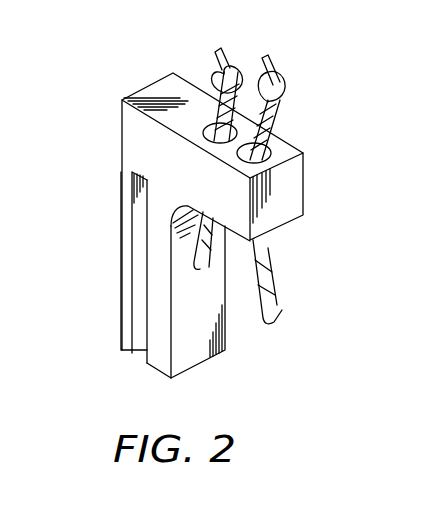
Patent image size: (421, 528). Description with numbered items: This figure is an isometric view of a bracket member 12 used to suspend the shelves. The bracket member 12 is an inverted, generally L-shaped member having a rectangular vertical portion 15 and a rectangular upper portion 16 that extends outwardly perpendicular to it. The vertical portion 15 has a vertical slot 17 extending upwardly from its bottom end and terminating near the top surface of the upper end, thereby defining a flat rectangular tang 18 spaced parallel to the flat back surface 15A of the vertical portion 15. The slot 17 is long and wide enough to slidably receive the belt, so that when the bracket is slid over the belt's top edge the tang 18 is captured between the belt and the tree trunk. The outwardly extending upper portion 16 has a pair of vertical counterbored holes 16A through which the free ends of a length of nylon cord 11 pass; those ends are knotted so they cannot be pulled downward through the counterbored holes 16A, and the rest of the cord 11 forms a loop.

The cord 11 is at (195, 268).
The bracket member 12 is at (127, 88).
The vertical portion 15 is at (190, 351).
The flat back surface 15A is at (150, 223).
The upper portion 16 is at (293, 188).
The counterbored holes 16A is at (204, 124).
The vertical slot 17 is at (137, 314).
The tang 18 is at (121, 258).